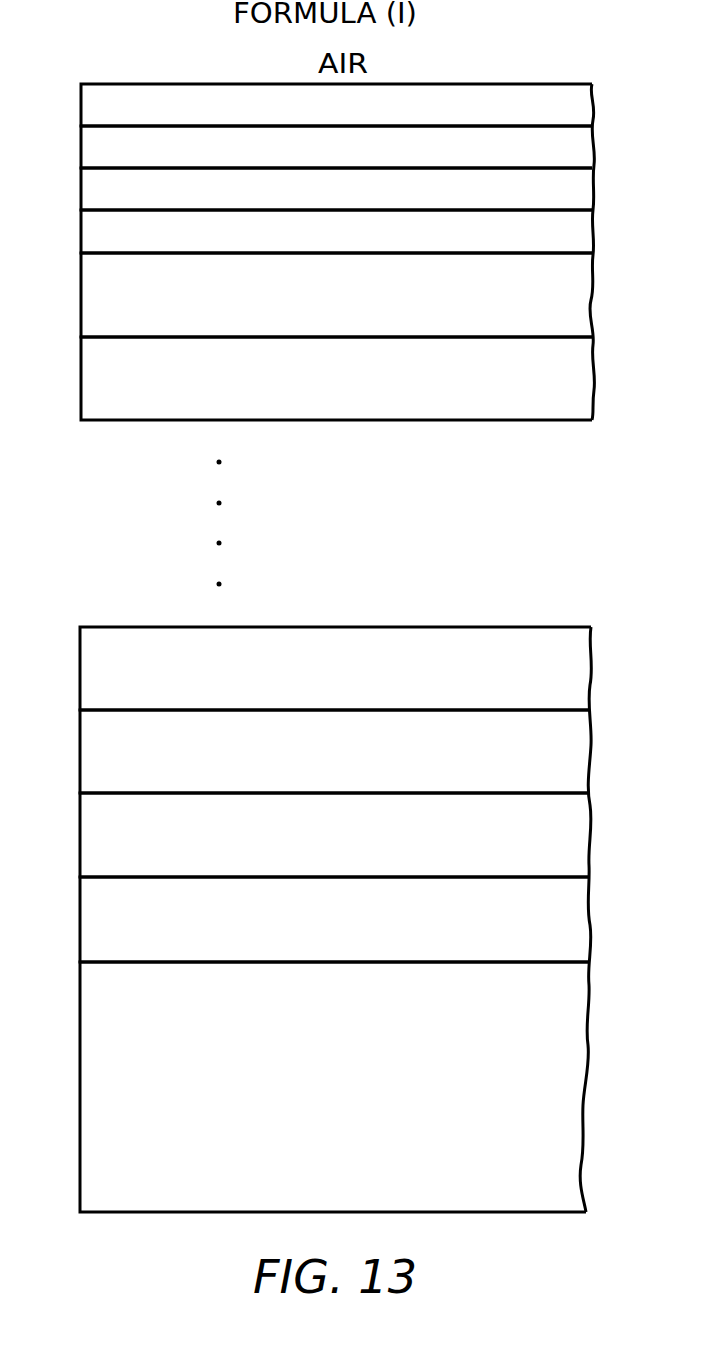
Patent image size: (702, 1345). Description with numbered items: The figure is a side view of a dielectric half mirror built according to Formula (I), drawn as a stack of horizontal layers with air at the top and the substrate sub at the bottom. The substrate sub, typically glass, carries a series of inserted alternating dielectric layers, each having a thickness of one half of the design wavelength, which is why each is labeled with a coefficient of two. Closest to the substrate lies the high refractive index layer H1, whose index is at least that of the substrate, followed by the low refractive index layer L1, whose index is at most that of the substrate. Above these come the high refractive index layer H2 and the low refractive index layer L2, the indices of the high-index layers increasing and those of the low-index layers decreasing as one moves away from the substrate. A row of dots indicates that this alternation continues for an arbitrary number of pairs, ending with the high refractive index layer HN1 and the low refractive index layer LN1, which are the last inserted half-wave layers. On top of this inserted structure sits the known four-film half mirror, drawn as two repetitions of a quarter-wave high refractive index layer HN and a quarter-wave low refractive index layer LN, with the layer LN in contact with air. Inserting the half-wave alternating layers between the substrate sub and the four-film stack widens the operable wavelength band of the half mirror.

The low refractive index layer N LN is at (336, 147).
The high refractive index layer N HN is at (336, 189).
The low refractive index layer N-1 LN1 is at (336, 295).
The high refractive index layer N-1 HN1 is at (336, 378).
The low refractive index layer 2 L2 is at (335, 668).
The high refractive index layer 2 H2 is at (335, 751).
The low refractive index layer 1 L1 is at (335, 835).
The high refractive index layer 1 H1 is at (334, 919).
The substrate sub is at (334, 1087).